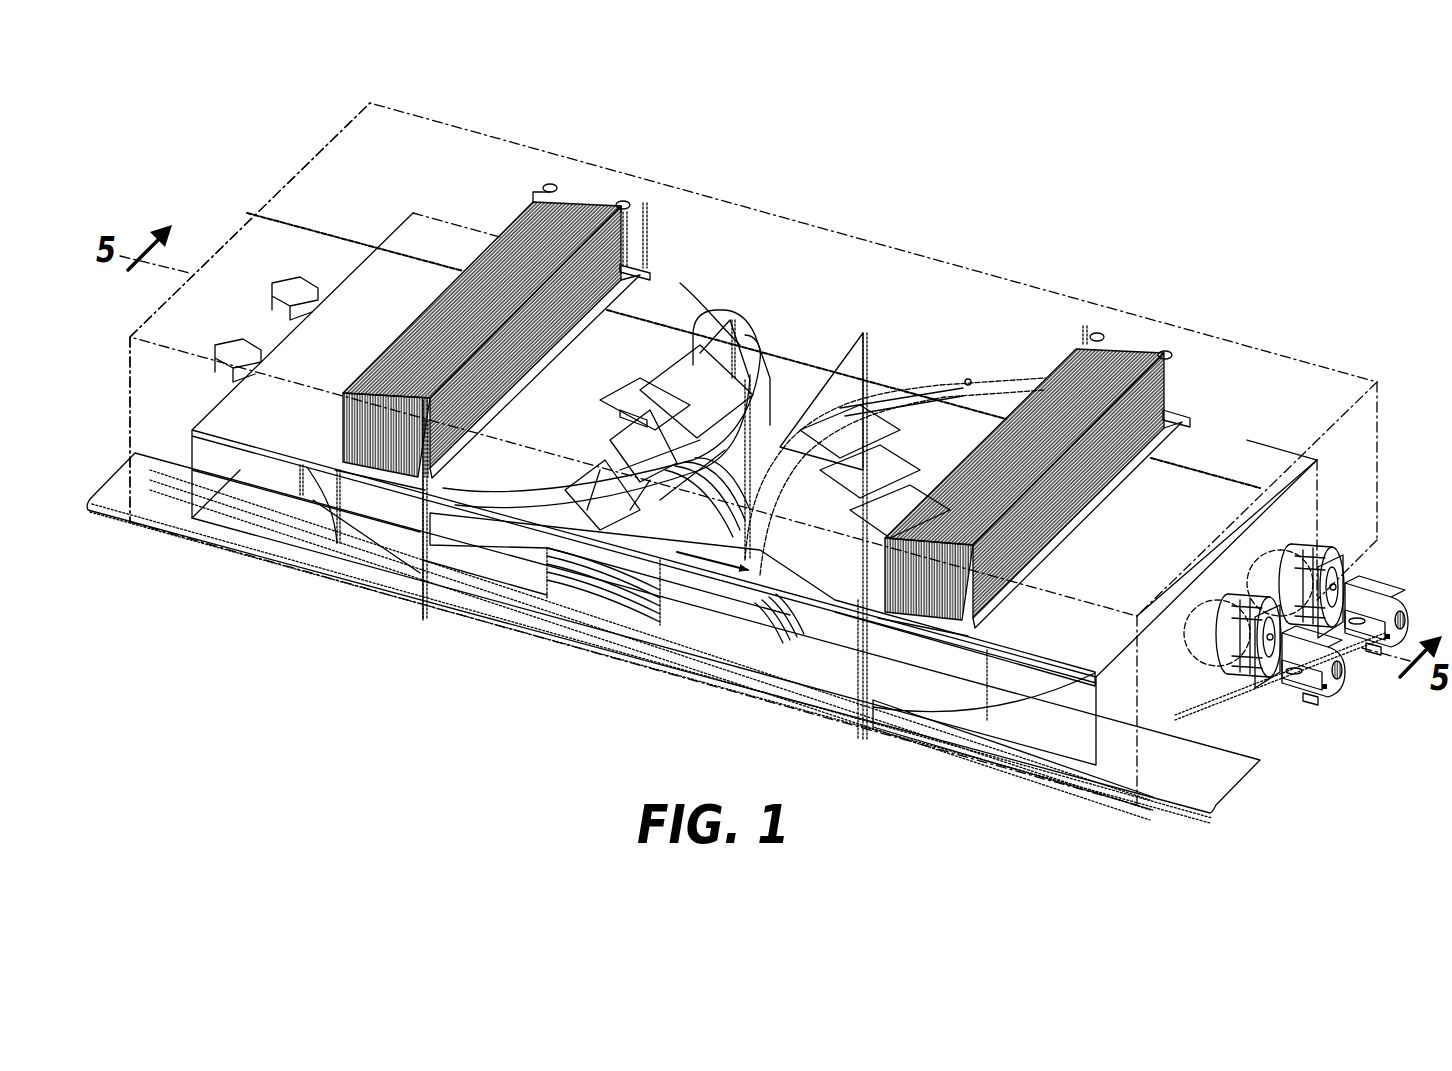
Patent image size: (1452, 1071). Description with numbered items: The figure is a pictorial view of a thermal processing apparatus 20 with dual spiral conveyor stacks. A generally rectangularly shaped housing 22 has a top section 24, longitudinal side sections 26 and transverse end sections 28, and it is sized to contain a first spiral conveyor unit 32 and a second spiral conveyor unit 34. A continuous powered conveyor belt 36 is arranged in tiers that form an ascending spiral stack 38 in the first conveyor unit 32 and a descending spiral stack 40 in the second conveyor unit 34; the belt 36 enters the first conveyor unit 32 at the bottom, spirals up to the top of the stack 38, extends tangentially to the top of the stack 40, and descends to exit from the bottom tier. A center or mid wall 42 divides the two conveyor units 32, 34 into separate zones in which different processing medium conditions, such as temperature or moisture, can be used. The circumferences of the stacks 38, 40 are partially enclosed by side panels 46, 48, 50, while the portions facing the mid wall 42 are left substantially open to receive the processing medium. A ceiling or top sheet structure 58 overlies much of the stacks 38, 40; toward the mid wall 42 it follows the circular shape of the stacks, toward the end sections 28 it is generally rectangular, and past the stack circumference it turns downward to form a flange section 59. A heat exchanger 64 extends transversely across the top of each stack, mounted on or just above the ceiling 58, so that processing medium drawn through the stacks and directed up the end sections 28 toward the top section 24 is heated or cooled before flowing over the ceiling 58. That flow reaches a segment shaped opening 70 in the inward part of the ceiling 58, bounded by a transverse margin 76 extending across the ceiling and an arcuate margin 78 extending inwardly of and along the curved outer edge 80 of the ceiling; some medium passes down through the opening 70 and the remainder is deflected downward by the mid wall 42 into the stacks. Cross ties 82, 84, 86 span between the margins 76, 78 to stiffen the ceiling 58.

The thermal processing apparatus 20 is at (757, 436).
The housing 22 is at (633, 452).
The top section 24 is at (753, 341).
The longitudinal side sections 26 is at (225, 312).
The transverse end sections 28 is at (1286, 498).
The first spiral conveyor unit 32 is at (723, 259).
The second spiral conveyor unit 34 is at (1034, 434).
The conveyor belt 36 is at (736, 653).
The ascending spiral stack 38 is at (591, 629).
The descending spiral stack 40 is at (941, 702).
The mid wall 42 is at (762, 624).
The side panel 46 is at (754, 625).
The side panel 48 is at (445, 525).
The side panel 50 is at (346, 554).
The ceiling structure 58 is at (718, 350).
The flange section 59 is at (644, 448).
The heat exchanger 64 is at (492, 304).
The segment shaped opening 70 is at (644, 373).
The transverse margin 76 is at (687, 354).
The arcuate margin 78 is at (787, 312).
The curved outer edge 80 is at (660, 571).
The cross tie 82 is at (589, 539).
The cross tie 84 is at (631, 568).
The cross tie 86 is at (895, 476).